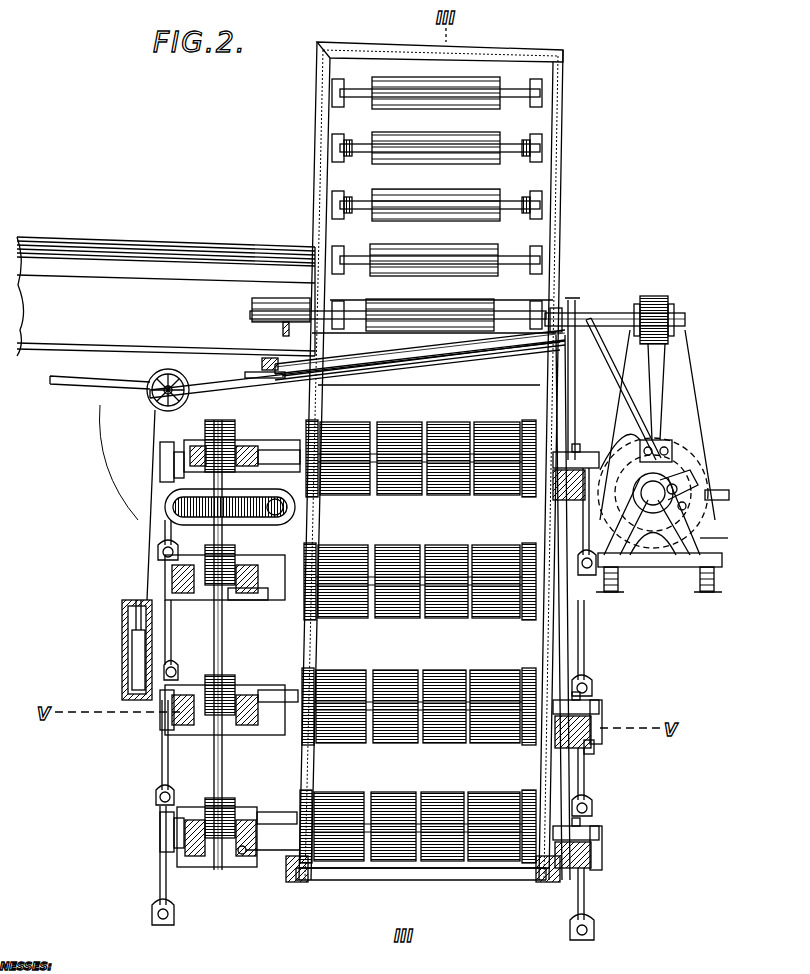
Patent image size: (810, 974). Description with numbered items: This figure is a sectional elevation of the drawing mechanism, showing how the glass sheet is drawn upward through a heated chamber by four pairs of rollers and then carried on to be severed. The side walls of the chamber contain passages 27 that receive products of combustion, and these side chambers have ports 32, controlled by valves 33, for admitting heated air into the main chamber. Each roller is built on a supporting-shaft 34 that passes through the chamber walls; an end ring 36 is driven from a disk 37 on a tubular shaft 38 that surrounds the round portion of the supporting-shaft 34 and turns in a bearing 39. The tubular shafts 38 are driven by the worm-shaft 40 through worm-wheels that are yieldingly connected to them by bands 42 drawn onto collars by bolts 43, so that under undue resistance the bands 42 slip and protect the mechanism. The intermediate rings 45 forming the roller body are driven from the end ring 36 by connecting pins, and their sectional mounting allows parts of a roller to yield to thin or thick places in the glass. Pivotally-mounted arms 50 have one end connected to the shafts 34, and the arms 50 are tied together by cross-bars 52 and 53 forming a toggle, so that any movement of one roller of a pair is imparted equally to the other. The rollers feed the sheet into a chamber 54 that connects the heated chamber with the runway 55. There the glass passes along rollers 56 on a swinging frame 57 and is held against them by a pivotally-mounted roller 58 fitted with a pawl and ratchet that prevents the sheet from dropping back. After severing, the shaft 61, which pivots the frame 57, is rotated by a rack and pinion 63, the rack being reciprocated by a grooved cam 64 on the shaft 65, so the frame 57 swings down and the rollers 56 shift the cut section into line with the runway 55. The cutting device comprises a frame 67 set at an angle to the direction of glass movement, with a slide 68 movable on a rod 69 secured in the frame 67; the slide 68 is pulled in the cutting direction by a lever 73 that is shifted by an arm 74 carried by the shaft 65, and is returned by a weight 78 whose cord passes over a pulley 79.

The passages 27 is at (420, 628).
The ports 32 is at (294, 874).
The valves 33 is at (304, 872).
The supporting-shafts 34 is at (566, 456).
The rings 36 is at (522, 424).
The disks 37 is at (318, 424).
The tubular shafts 38 is at (238, 635).
The bearings 39 is at (242, 445).
The worm-shaft 40 is at (224, 646).
The bands 42 is at (248, 601).
The bolts 43 is at (232, 560).
The intermediate rings 45 is at (404, 424).
The pivotally-mounted arms 50 is at (150, 524).
The cross-bar 52 is at (160, 462).
The cross-bar 53 is at (170, 488).
The chamber 54 is at (330, 178).
The runway 55 is at (133, 250).
The rollers 56 is at (398, 206).
The swinging frame 57 is at (320, 216).
The pivotally-mounted roller 58 is at (436, 152).
The shaft 61 is at (604, 318).
The rack and pinion 63 is at (670, 312).
The grooved cam 64 is at (618, 445).
The shaft 65 is at (696, 490).
The frame 67 is at (480, 350).
The carriage or slide 68 is at (324, 364).
The rod 69 is at (410, 356).
The lever 73 is at (620, 390).
The arm 74 is at (677, 502).
The weight 78 is at (122, 662).
The pulley 79 is at (150, 402).